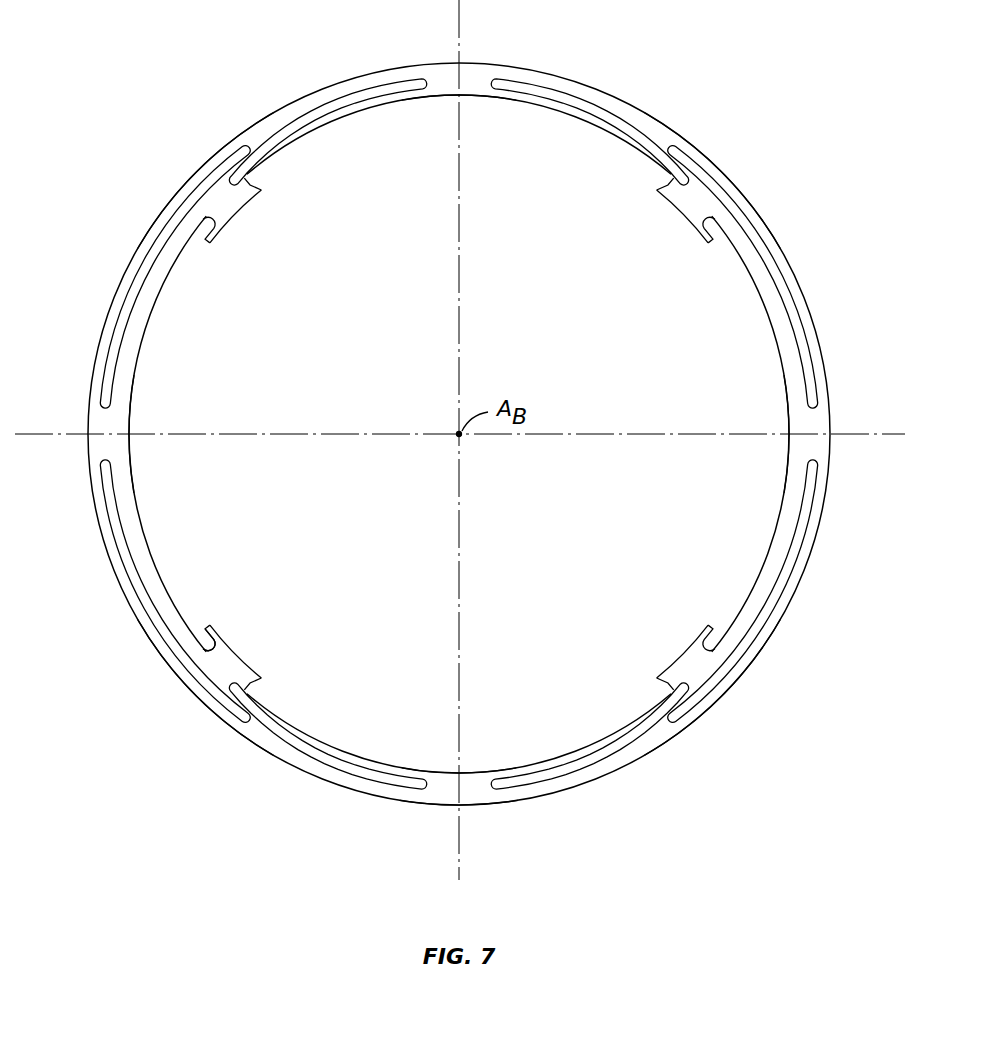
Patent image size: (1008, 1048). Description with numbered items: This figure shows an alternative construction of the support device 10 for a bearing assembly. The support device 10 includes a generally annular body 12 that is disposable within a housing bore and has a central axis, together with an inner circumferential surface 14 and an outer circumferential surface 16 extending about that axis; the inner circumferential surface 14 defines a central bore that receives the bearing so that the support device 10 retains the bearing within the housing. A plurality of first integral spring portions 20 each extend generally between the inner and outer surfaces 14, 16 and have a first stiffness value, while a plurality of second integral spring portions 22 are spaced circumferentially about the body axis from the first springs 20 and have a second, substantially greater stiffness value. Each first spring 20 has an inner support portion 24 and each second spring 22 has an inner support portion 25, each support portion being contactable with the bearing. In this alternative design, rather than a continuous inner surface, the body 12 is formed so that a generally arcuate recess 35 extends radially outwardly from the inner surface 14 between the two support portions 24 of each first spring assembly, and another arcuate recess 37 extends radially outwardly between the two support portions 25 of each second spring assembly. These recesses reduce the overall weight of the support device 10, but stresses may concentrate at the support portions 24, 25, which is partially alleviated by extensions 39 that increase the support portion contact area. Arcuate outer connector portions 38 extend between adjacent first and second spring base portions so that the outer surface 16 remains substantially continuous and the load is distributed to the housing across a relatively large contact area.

The support device 10 is at (170, 42).
The body 12 is at (202, 708).
The inner circumferential surface 14 is at (229, 620).
The outer circumferential surface 16 is at (416, 808).
The first integral spring portion 20 is at (323, 112).
The second integral spring portion 22 is at (145, 297).
The inner support portion 24 is at (242, 209).
The inner support portion 25 is at (232, 222).
The arcuate recess 35 is at (393, 118).
The arcuate recess 37 is at (157, 353).
The outer connector portion 38 is at (758, 212).
The extension 39 is at (250, 186).